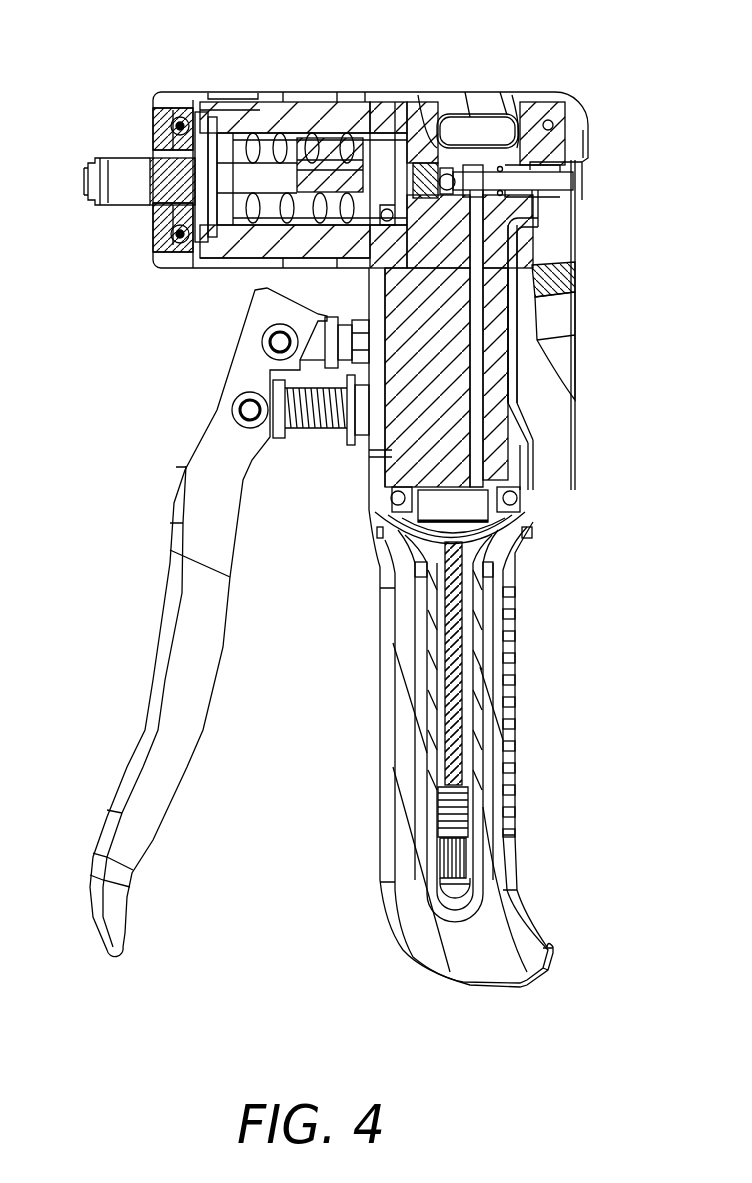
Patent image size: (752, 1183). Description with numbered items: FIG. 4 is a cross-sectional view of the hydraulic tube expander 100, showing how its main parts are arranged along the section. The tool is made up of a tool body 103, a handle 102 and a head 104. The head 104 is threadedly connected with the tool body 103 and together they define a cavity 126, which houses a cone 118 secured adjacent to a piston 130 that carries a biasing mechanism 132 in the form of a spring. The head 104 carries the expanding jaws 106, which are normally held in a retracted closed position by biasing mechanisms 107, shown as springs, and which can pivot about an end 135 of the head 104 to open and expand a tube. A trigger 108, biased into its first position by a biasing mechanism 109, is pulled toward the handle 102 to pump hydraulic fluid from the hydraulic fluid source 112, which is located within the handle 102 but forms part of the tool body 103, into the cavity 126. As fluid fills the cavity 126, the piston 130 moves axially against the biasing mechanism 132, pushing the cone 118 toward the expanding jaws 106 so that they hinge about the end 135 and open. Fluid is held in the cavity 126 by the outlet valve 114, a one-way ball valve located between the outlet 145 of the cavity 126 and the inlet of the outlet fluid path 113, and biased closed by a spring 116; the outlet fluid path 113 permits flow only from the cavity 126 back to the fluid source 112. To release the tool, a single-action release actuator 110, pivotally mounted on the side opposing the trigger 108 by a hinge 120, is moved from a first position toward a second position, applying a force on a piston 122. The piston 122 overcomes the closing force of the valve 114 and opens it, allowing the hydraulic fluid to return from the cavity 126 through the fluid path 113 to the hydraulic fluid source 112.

The hydraulic tube expander 100 is at (708, 1067).
The handle 102 is at (520, 766).
The tool body 103 is at (386, 474).
The head 104 is at (232, 84).
The expanding jaws 106 is at (80, 188).
The biasing mechanisms 107 is at (153, 105).
The trigger 108 is at (182, 505).
The biasing mechanism 109 is at (316, 432).
The single-action release actuator 110 is at (578, 316).
The hydraulic fluid source 112 is at (452, 637).
The outlet fluid path 113 is at (495, 423).
The outlet valve 114 is at (447, 168).
The spring 116 is at (417, 162).
The cone 118 is at (240, 208).
The hinge 120 is at (554, 125).
The piston 122 is at (540, 92).
The cavity 126 is at (331, 97).
The piston 130 is at (373, 97).
The biasing mechanism 132 is at (289, 97).
The end 135 is at (168, 142).
The outlet 145 is at (395, 140).